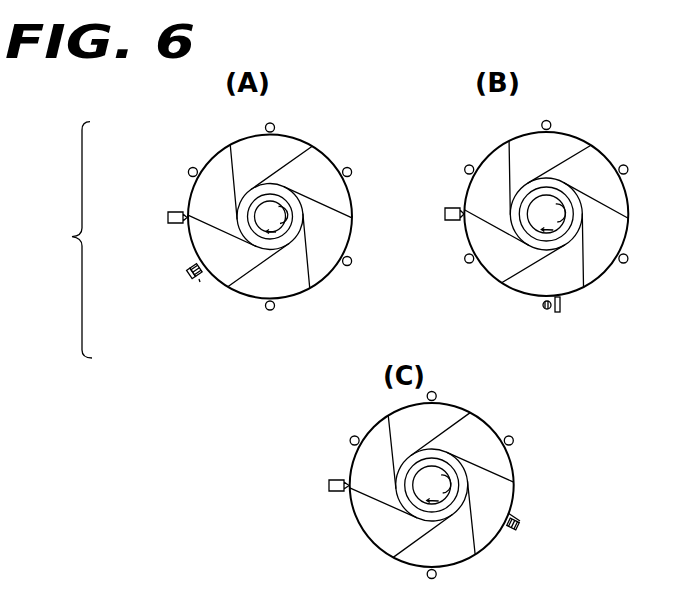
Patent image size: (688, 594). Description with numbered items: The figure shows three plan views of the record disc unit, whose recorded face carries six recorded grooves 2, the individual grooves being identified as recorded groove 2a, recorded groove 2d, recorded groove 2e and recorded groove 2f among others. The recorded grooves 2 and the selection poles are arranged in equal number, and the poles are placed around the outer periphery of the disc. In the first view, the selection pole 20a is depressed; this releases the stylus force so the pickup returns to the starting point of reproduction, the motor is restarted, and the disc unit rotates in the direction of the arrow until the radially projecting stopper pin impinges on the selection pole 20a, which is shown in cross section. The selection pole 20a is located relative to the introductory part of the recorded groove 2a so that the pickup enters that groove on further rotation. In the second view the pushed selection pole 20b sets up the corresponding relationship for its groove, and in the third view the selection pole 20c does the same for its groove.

The recorded grooves 2 is at (171, 240).
The recorded groove 2a is at (253, 280).
The recorded groove 2d is at (287, 155).
The recorded groove 2e is at (333, 207).
The recorded groove 2f is at (312, 267).
The selection pole 20a is at (189, 278).
The selection pole 20b is at (545, 305).
The selection pole 20c is at (518, 530).